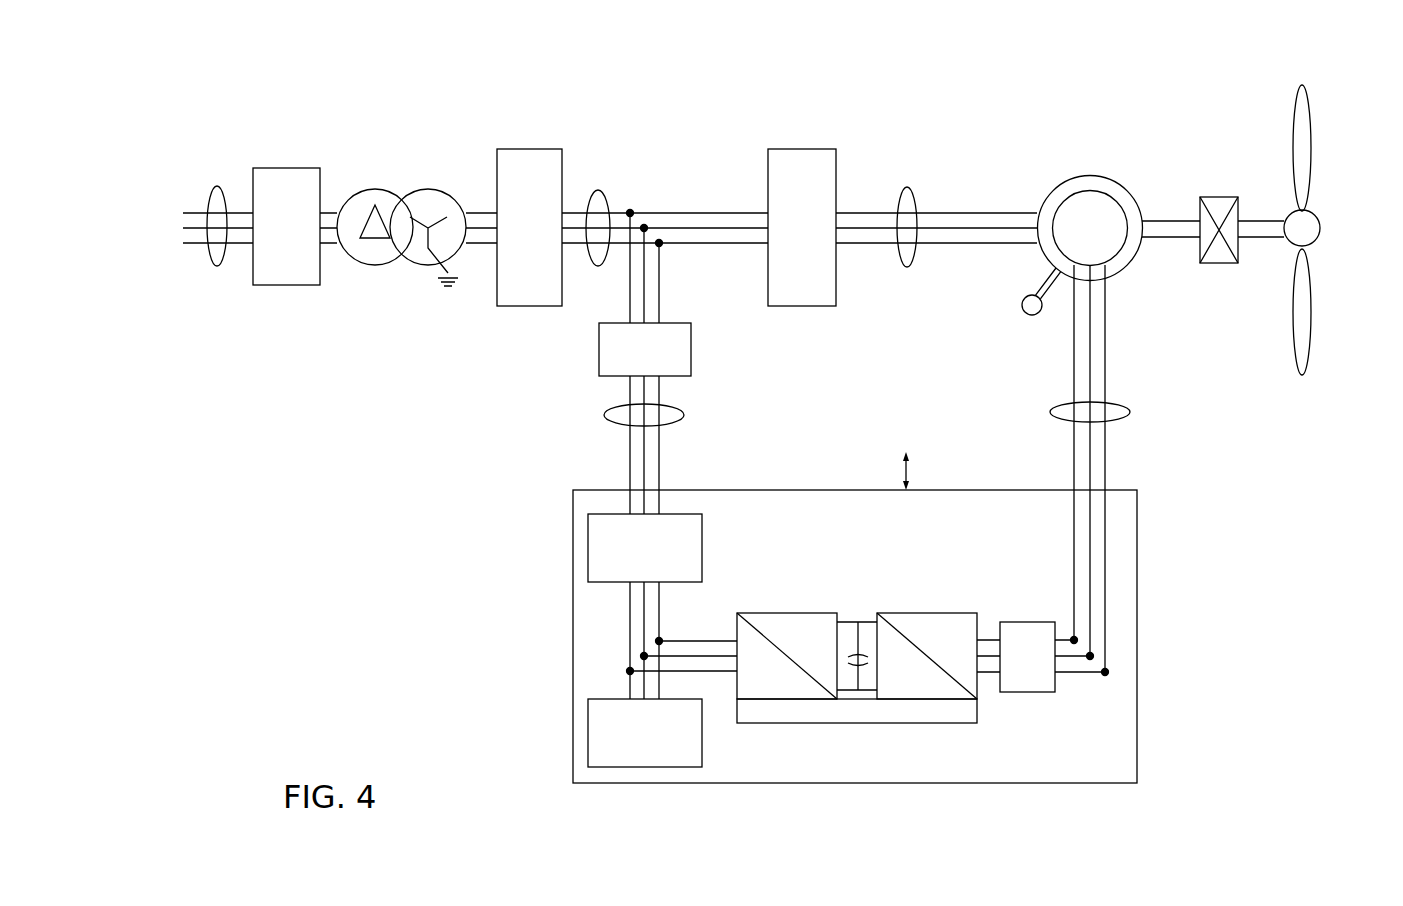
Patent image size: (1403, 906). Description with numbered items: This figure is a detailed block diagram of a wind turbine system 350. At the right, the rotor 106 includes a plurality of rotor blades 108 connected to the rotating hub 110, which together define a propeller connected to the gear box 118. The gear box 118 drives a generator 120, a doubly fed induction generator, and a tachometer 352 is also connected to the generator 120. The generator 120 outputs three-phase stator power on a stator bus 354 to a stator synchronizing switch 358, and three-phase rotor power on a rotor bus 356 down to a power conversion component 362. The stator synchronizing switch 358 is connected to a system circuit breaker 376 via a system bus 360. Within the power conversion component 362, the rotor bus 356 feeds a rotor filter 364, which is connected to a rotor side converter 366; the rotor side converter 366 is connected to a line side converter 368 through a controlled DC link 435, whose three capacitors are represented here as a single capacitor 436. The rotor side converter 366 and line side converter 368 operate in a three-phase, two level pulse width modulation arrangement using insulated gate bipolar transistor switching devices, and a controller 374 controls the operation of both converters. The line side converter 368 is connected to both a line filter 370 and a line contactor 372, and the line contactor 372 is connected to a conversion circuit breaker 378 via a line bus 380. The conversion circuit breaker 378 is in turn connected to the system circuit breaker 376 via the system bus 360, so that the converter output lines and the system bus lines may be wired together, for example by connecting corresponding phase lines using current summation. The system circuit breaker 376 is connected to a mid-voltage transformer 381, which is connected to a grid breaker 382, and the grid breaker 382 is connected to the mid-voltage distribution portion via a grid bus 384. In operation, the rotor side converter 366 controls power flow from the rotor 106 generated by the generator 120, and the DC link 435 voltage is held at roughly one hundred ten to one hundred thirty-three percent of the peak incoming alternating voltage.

The rotor 106 is at (1339, 201).
The rotor blades 108 is at (1311, 155).
The rotating hub 110 is at (1322, 230).
The gear box 118 is at (1220, 263).
The generator 120 is at (1135, 196).
The wind turbine system 350 is at (318, 555).
The tachometer 352 is at (1024, 297).
The stator bus 354 is at (907, 187).
The rotor bus 356 is at (1130, 412).
The stator synchronizing switch 358 is at (802, 149).
The system bus 360 is at (598, 190).
The power conversion component 362 is at (1137, 742).
The rotor filter 364 is at (1027, 692).
The rotor side converter 366 is at (977, 685).
The line side converter 368 is at (737, 685).
The line filter 370 is at (588, 733).
The line contactor 372 is at (588, 548).
The controller 374 is at (778, 723).
The system circuit breaker 376 is at (530, 149).
The conversion circuit breaker 378 is at (599, 348).
The line bus 380 is at (604, 415).
The mid-voltage transformer 381 is at (413, 190).
The grid breaker 382 is at (301, 168).
The grid bus 384 is at (217, 186).
The DC link 435 is at (846, 622).
The capacitor 436 is at (855, 677).